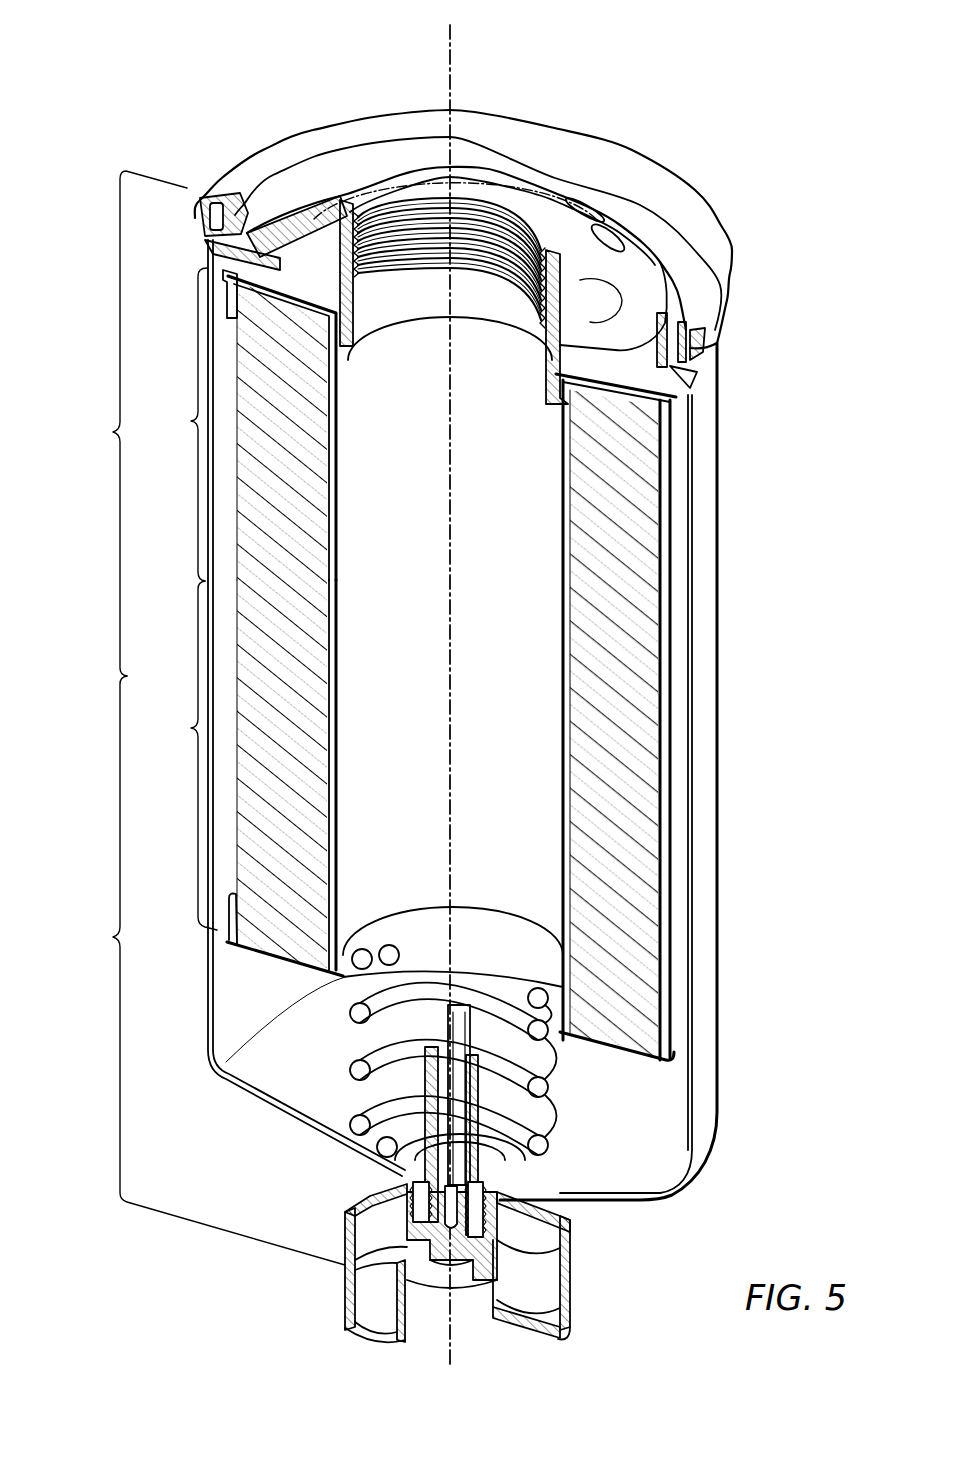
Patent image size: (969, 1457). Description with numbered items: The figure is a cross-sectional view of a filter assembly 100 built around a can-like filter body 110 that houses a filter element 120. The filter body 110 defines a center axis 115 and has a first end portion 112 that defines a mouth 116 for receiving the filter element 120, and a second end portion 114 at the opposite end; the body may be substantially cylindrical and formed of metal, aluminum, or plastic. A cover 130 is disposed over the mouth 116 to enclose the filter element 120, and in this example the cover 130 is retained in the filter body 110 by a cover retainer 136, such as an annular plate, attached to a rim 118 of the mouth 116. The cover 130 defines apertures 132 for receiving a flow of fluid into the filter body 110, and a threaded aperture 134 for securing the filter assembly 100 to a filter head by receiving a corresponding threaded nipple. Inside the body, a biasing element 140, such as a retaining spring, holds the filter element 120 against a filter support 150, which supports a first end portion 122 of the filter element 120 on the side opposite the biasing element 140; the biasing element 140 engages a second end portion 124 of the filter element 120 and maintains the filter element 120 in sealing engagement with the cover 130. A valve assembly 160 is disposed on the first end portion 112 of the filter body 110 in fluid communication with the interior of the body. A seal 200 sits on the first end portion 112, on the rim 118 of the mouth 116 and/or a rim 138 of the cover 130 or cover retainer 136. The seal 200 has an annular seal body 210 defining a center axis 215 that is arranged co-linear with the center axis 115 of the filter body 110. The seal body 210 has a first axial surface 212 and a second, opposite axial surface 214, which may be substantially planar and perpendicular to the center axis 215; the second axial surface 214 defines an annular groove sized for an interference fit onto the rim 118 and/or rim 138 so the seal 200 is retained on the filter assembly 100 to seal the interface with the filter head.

The filter assembly 100 is at (151, 64).
The center axis 115 is at (452, 48).
The center axis 215 is at (452, 48).
The filter body 110 is at (707, 723).
The first end portion 112 is at (130, 423).
The second end portion 114 is at (209, 970).
The mouth 116 is at (425, 192).
The rim 118 is at (208, 235).
The filter element 120 is at (625, 538).
The first end portion 122 is at (244, 424).
The second end portion 124 is at (246, 778).
The cover 130 is at (640, 265).
The apertures 132 is at (620, 244).
The threaded aperture 134 is at (375, 192).
The cover retainer 136 is at (620, 240).
The rim 138 is at (215, 198).
The biasing element 140 is at (550, 1118).
The filter support 150 is at (545, 375).
The valve assembly 160 is at (345, 1242).
The seal 200 is at (598, 133).
The seal body 210 is at (728, 305).
The first axial surface 212 is at (540, 141).
The second axial surface 214 is at (676, 372).